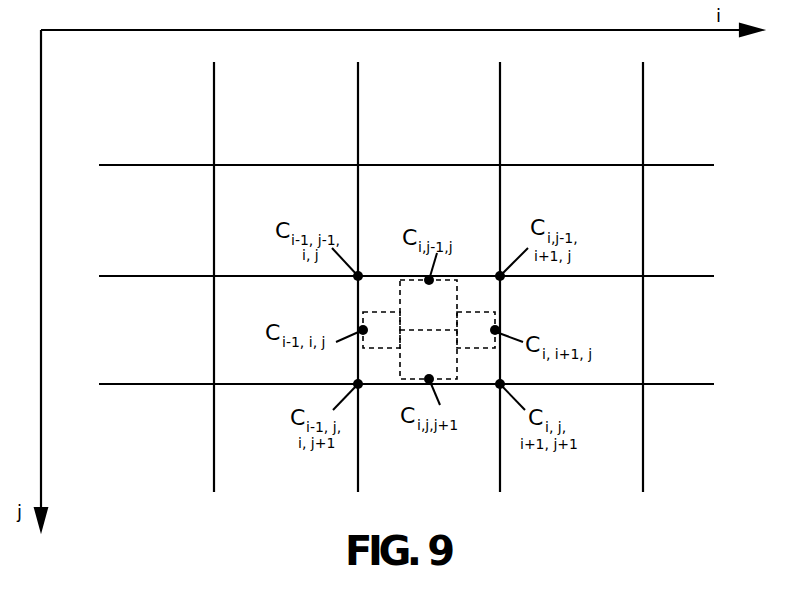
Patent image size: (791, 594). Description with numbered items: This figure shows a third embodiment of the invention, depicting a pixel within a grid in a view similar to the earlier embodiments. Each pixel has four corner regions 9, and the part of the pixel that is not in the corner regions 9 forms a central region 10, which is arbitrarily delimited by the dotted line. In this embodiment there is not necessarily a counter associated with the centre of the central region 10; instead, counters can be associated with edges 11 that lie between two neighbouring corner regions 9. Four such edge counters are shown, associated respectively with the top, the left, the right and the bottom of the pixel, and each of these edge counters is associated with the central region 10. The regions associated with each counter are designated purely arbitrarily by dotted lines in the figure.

The corner region 9 is at (378, 286).
The central region 10 is at (400, 293).
The edge 11 is at (470, 276).